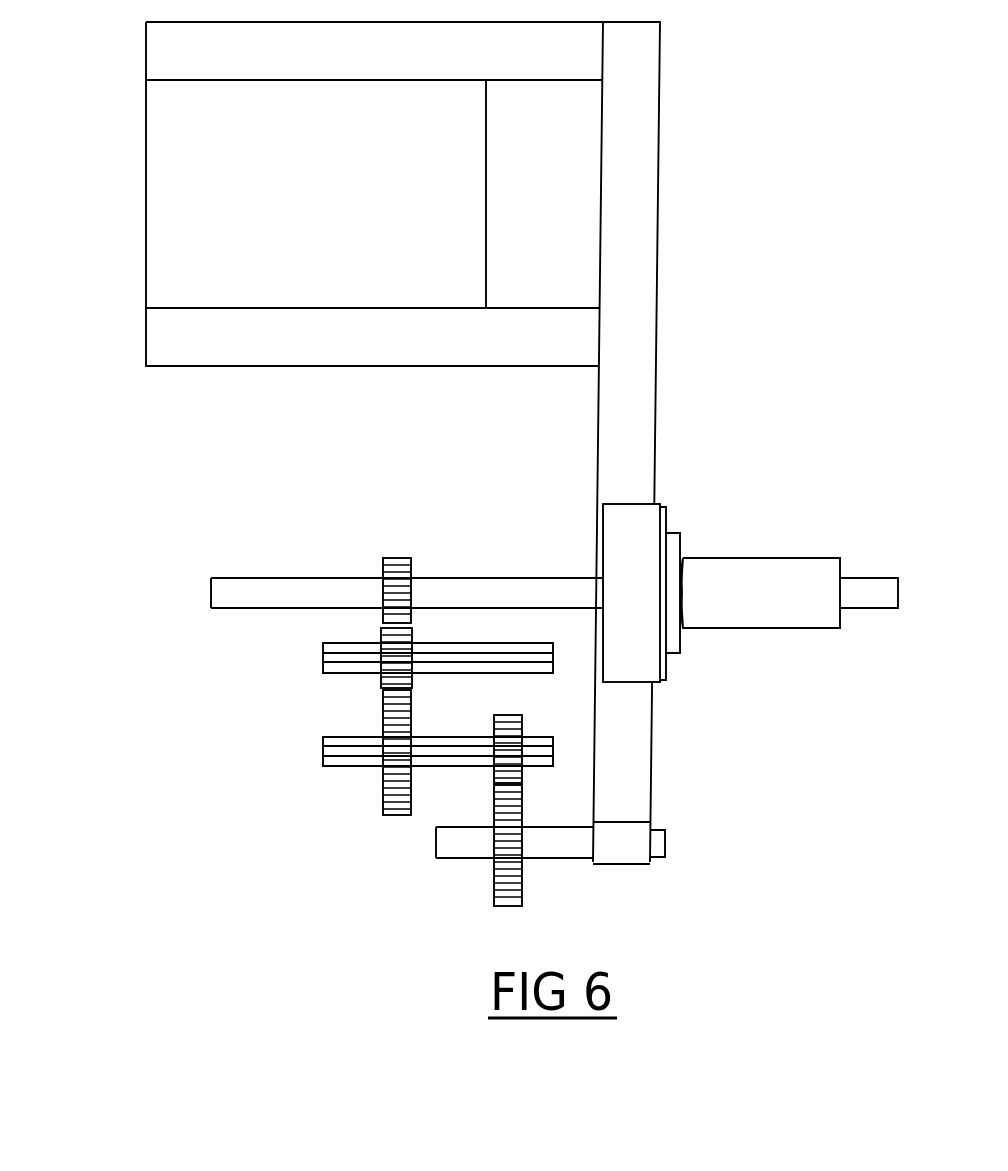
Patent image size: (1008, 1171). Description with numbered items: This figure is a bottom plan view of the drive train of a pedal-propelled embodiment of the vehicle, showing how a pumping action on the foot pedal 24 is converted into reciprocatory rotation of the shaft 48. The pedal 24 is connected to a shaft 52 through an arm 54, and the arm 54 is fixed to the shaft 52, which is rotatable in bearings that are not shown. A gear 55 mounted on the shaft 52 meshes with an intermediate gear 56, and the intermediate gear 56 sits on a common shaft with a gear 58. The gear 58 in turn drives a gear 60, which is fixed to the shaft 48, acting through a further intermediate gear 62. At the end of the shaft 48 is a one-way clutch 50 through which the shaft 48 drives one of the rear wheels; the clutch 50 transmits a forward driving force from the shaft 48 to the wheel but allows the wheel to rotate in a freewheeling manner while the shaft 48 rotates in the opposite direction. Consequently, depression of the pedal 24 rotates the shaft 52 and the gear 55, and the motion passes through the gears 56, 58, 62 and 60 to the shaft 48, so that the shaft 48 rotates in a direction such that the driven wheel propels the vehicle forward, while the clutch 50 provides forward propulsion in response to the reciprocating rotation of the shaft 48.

The foot pedal 24 is at (158, 185).
The arm 54 is at (650, 220).
The shaft 48 is at (537, 582).
The clutch 50 is at (642, 665).
The gear 60 is at (388, 558).
The intermediate gear 62 is at (397, 672).
The gear 58 is at (375, 810).
The intermediate gear 56 is at (515, 722).
The gear 55 is at (490, 887).
The shaft 52 is at (540, 850).